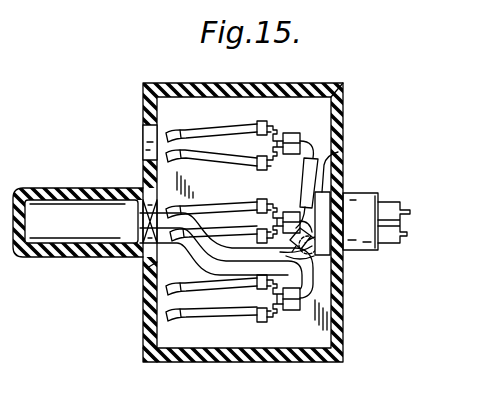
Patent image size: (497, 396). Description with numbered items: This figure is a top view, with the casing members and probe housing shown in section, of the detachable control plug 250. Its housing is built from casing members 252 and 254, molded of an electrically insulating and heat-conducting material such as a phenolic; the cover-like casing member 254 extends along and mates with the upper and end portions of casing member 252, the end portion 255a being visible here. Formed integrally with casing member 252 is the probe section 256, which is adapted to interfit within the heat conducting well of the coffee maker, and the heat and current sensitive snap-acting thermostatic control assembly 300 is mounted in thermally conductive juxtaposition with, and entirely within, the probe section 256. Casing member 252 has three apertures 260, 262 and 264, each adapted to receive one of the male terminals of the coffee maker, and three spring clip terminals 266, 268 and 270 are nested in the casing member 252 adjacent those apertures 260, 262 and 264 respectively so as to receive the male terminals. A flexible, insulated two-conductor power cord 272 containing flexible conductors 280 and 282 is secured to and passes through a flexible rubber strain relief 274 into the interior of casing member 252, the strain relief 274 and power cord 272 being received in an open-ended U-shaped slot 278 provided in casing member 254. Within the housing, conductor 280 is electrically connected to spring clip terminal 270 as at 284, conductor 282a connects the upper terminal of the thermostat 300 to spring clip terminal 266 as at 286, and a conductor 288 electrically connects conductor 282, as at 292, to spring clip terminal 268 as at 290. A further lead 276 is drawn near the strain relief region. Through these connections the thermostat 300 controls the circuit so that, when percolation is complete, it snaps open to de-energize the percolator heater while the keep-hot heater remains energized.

The detachable control plug 250 is at (127, 70).
The casing member 252 is at (199, 87).
The casing member 254 is at (342, 116).
The end portion 255a is at (350, 384).
The probe section 256 is at (98, 188).
The aperture 260 is at (147, 308).
The aperture 262 is at (146, 220).
The aperture 264 is at (148, 142).
The spring clip terminal 266 is at (213, 316).
The spring clip terminal 268 is at (217, 206).
The spring clip terminal 270 is at (207, 128).
The power cord 272 is at (396, 192).
The strain relief 274 is at (352, 195).
The lead wire 276 is at (346, 150).
The U-shaped slot 278 is at (347, 182).
The conductor 280 is at (306, 178).
The conductor 282 is at (188, 242).
The conductor 282a is at (190, 256).
The connection 284 is at (304, 120).
The connection 286 is at (295, 312).
The conductor 288 is at (340, 258).
The connection 290 is at (291, 202).
The connection 292 is at (340, 282).
The thermostatic control assembly 300 is at (60, 165).